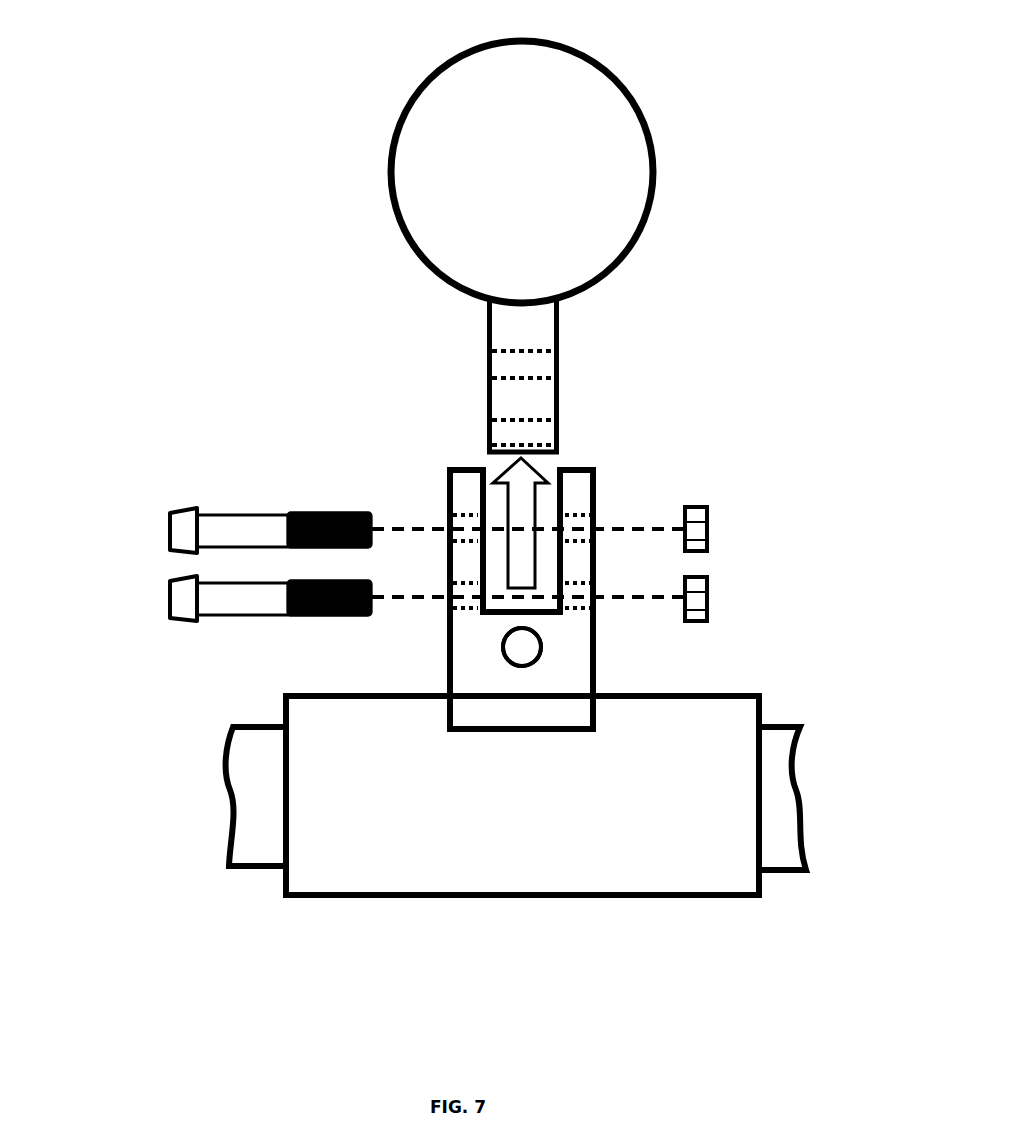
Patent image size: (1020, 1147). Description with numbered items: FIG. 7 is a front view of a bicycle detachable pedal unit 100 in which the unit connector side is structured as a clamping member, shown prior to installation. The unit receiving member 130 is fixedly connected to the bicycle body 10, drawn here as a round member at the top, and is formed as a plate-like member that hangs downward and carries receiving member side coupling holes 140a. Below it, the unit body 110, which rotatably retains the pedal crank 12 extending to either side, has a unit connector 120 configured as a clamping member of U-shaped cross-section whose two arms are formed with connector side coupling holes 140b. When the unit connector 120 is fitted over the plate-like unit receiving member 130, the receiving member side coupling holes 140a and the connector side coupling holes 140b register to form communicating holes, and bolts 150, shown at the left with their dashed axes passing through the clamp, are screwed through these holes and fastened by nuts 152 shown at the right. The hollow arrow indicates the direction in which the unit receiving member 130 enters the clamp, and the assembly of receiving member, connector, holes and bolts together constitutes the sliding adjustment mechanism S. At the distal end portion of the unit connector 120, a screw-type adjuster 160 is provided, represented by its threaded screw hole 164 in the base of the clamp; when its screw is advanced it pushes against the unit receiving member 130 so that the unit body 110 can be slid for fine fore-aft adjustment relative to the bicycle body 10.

The bicycle body 10 is at (442, 135).
The pedal crank 12 is at (232, 757).
The bicycle detachable pedal unit 100 is at (390, 316).
The unit body 110 is at (692, 722).
The unit connector 120 is at (560, 654).
The unit receiving member 130 is at (520, 395).
The receiving member side coupling holes 140a is at (495, 360).
The connector side coupling holes 140b is at (468, 522).
The bolts 150 is at (178, 532).
The nuts 152 is at (708, 522).
The screw-type adjuster 160 is at (512, 650).
The threaded screw hole 164 is at (522, 647).
The sliding adjustment mechanism S is at (580, 417).